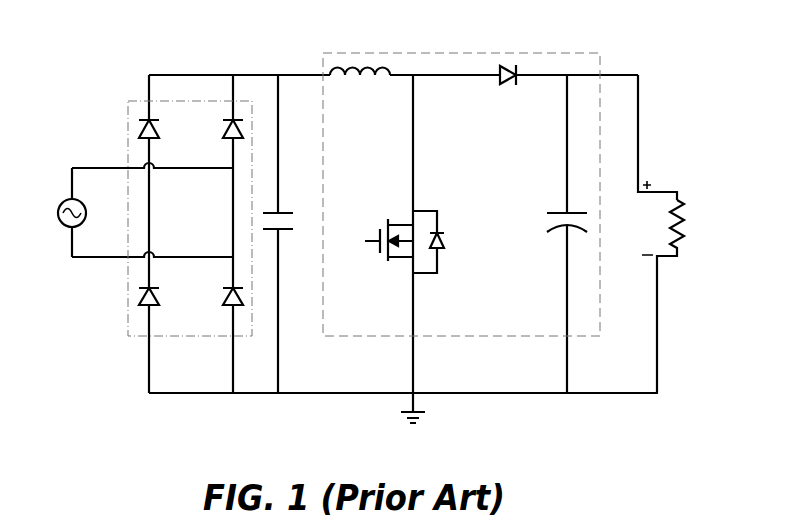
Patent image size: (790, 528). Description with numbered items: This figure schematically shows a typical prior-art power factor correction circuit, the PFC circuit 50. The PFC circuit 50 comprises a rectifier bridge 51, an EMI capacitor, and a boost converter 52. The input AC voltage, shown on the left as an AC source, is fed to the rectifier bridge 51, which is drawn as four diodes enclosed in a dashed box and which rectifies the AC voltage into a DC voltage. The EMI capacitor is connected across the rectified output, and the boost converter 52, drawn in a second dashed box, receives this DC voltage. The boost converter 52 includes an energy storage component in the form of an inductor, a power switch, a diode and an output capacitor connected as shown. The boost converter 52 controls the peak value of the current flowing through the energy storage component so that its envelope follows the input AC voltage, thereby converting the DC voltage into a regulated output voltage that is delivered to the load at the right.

The PFC circuit 50 is at (95, 79).
The rectifier bridge 51 is at (127, 129).
The boost converter 52 is at (362, 332).